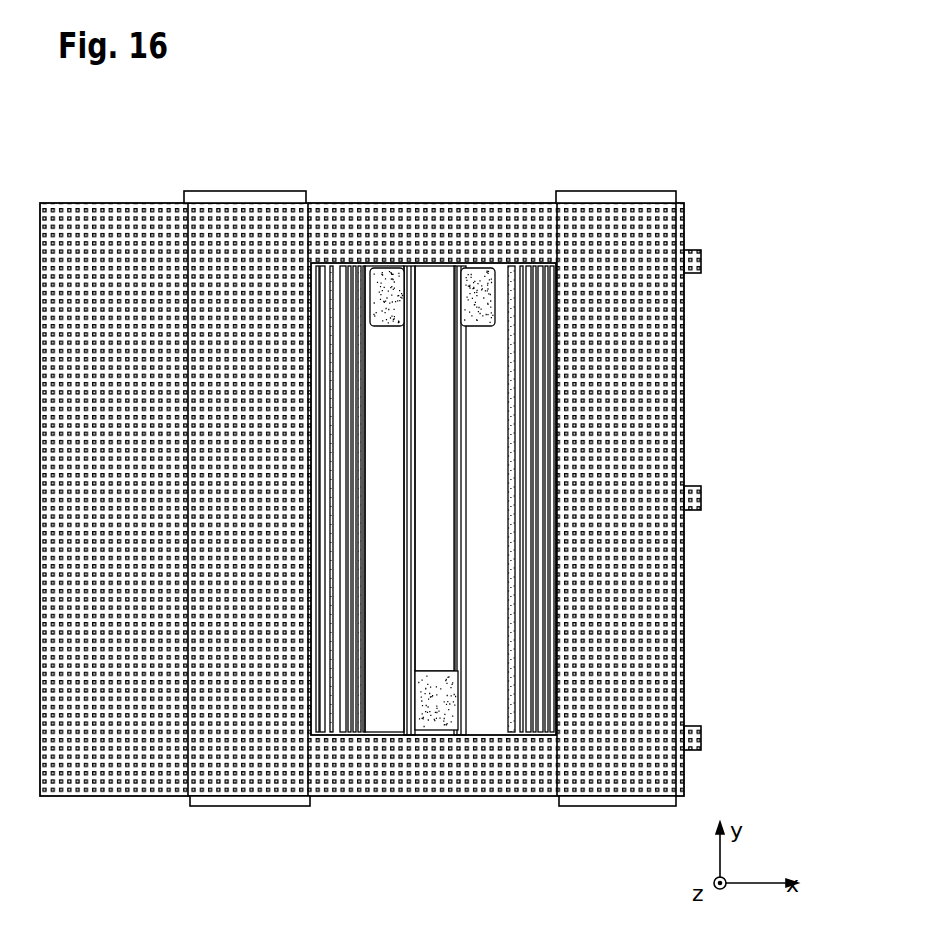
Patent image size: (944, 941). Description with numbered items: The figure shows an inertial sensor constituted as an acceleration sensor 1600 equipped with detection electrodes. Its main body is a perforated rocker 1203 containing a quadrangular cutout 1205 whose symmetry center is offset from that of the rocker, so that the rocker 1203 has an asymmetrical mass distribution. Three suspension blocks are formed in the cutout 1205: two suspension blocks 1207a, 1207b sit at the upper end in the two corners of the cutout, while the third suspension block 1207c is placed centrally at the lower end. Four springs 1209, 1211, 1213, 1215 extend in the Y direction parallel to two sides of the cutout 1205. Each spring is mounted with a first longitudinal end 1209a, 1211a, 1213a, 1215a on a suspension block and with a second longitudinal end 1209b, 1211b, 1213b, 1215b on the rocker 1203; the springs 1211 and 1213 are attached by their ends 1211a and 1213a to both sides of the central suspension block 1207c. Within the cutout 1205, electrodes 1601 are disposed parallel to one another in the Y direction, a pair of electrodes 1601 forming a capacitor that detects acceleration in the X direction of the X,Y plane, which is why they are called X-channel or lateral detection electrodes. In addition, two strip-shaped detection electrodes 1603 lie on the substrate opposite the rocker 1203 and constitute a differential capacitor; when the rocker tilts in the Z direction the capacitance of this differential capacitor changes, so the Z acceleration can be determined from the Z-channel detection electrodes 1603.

The acceleration sensor 1600 is at (420, 468).
The rocker 1203 is at (140, 768).
The cutout 1205 is at (370, 705).
The suspension block 1207a is at (372, 272).
The suspension block 1207b is at (464, 268).
The suspension block 1207c is at (427, 713).
The spring 1209 is at (353, 503).
The first longitudinal end 1209a is at (399, 300).
The second longitudinal end 1209b is at (393, 727).
The spring 1211 is at (511, 503).
The first longitudinal end 1211a is at (403, 727).
The second longitudinal end 1211b is at (448, 290).
The spring 1213 is at (606, 481).
The first longitudinal end 1213a is at (458, 724).
The second longitudinal end 1213b is at (453, 285).
The spring 1215 is at (627, 501).
The first longitudinal end 1215a is at (457, 266).
The second longitudinal end 1215b is at (462, 724).
The electrodes 1601 is at (345, 412).
The detection electrodes 1603 is at (200, 792).